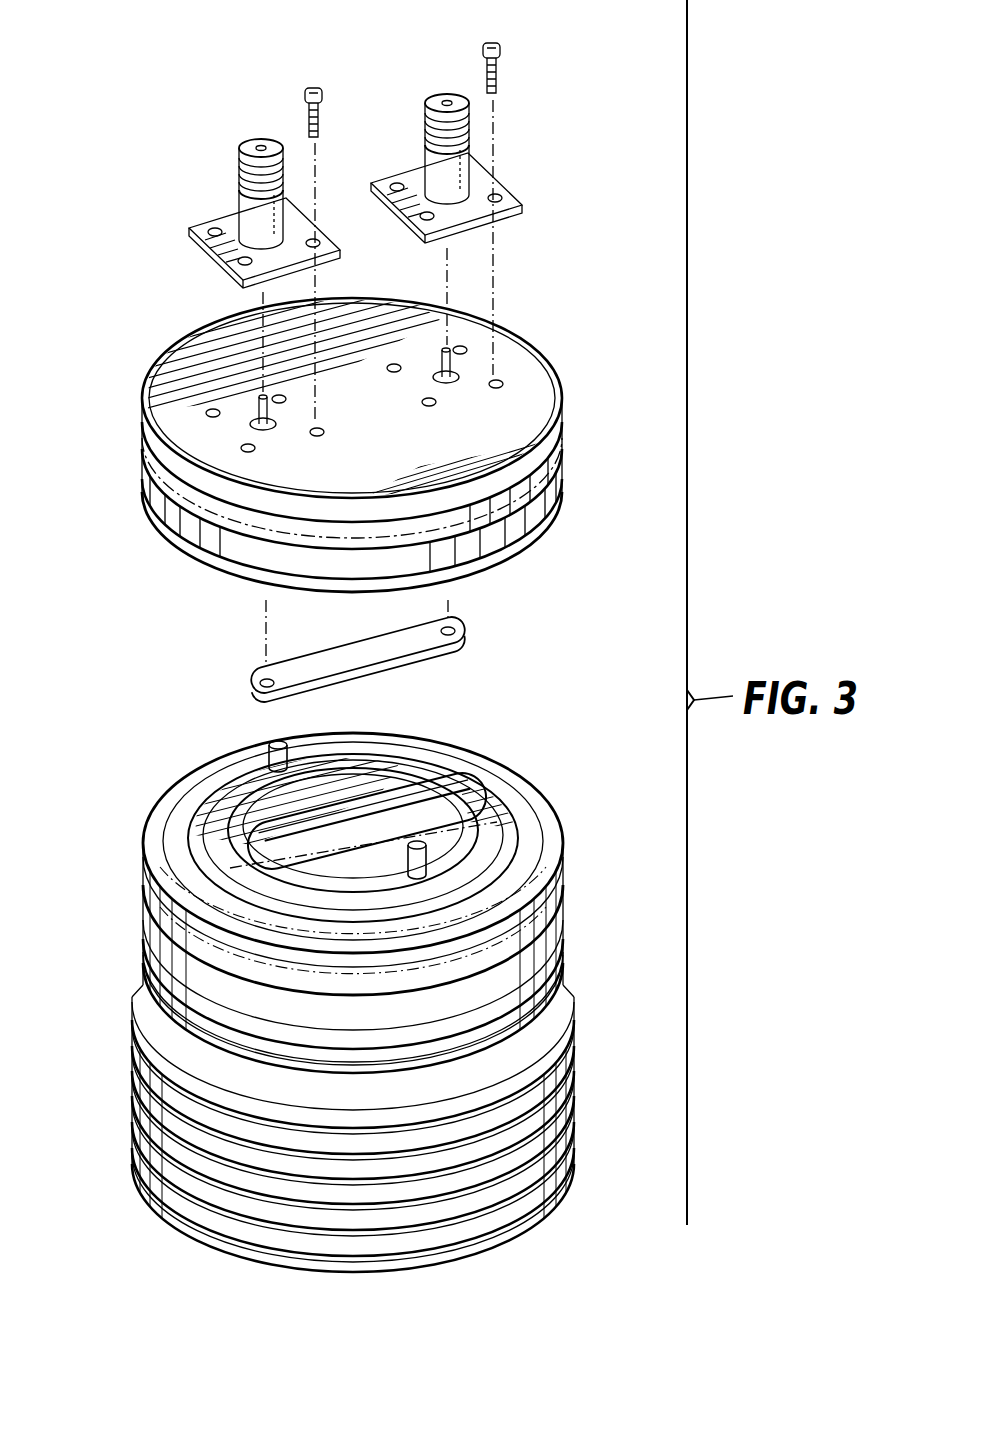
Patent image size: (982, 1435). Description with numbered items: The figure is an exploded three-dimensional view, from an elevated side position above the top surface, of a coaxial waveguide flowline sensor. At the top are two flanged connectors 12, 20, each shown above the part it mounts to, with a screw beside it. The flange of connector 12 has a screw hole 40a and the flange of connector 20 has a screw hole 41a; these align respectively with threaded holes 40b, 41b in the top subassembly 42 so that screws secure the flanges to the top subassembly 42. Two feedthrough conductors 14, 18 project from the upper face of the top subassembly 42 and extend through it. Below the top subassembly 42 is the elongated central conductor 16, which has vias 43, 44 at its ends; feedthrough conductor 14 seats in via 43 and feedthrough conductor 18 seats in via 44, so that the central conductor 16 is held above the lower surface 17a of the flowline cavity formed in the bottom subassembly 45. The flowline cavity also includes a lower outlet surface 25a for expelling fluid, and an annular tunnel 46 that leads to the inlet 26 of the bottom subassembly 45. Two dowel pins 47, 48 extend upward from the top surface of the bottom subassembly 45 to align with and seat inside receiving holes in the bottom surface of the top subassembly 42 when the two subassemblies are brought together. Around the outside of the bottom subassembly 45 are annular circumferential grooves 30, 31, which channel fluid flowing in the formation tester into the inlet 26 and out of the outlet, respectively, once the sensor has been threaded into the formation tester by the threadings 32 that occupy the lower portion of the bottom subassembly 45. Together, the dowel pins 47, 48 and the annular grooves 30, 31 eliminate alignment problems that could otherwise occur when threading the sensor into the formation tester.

The flanged connector 12 is at (430, 108).
The flanged connector 20 is at (244, 150).
The screw hole 40a is at (505, 194).
The screw hole 41a is at (207, 231).
The feedthrough conductor 14 is at (454, 364).
The feedthrough conductor 18 is at (260, 396).
The threaded hole 40b is at (503, 383).
The threaded hole 41b is at (208, 411).
The top subassembly 42 is at (341, 418).
The central conductor 16 is at (354, 659).
The via 43 is at (470, 625).
The via 44 is at (258, 682).
The lower surface of the flowline cavity 17a is at (357, 820).
The lower outlet surface 25a is at (465, 805).
The dowel pin 47 is at (269, 748).
The dowel pin 48 is at (427, 858).
The annular tunnel 46 is at (156, 830).
The annular circumferential groove 30 is at (510, 888).
The annular circumferential groove 31 is at (150, 996).
The inlet 26 is at (226, 990).
The threadings 32 is at (95, 1008).
The bottom subassembly 45 is at (333, 987).